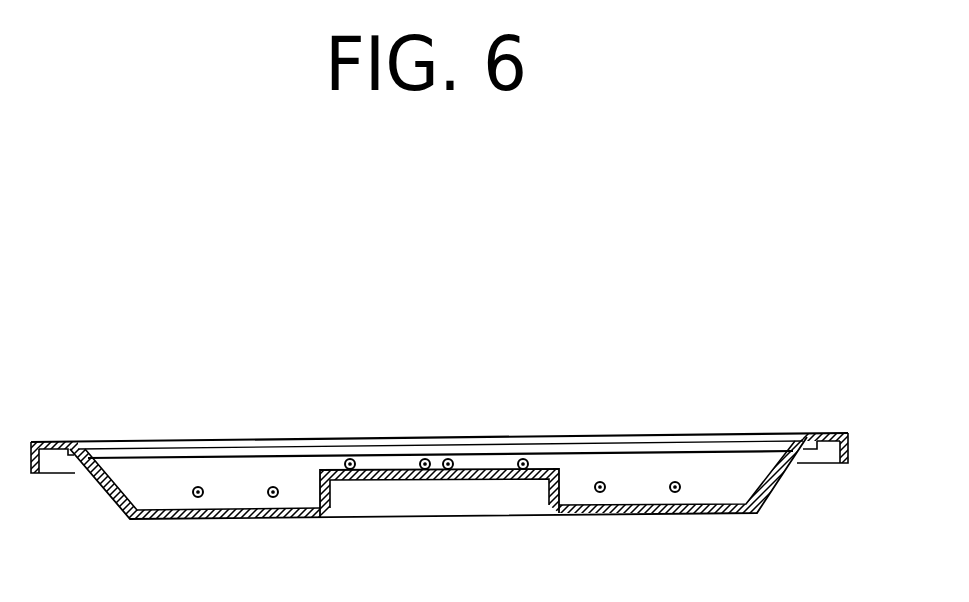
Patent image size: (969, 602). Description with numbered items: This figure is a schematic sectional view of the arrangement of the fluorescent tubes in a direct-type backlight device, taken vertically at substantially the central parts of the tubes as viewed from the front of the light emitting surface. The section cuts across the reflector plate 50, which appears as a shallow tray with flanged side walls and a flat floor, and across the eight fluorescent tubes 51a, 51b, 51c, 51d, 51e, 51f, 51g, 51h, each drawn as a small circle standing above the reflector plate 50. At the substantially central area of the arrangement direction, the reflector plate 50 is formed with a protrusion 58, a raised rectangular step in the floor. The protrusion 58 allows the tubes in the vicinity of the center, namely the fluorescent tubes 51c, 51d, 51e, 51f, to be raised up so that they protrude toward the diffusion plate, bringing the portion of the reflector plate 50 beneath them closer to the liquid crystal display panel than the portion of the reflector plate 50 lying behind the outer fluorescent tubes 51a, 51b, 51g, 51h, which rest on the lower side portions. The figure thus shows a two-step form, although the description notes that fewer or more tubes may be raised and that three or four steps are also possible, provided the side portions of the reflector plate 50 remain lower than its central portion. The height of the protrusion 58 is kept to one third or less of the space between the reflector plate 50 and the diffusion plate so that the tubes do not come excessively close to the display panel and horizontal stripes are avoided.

The reflector plate 50 is at (773, 488).
The protrusion 58 is at (335, 470).
The fluorescent tube 51a is at (198, 487).
The fluorescent tube 51b is at (273, 487).
The fluorescent tube 51c is at (351, 459).
The fluorescent tube 51d is at (425, 459).
The fluorescent tube 51e is at (449, 459).
The fluorescent tube 51f is at (527, 459).
The fluorescent tube 51g is at (601, 482).
The fluorescent tube 51h is at (676, 482).